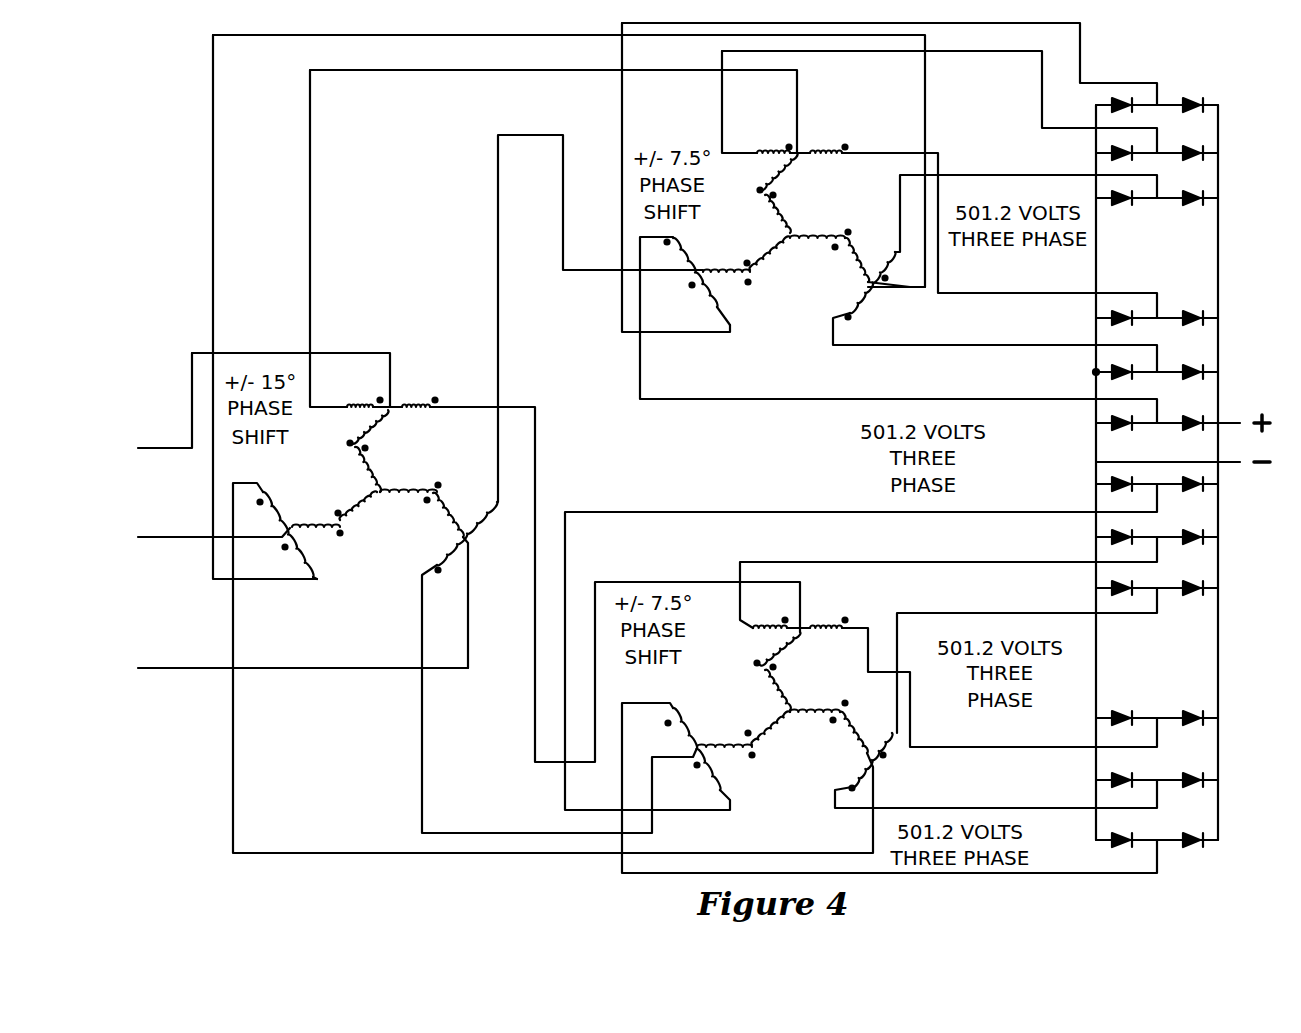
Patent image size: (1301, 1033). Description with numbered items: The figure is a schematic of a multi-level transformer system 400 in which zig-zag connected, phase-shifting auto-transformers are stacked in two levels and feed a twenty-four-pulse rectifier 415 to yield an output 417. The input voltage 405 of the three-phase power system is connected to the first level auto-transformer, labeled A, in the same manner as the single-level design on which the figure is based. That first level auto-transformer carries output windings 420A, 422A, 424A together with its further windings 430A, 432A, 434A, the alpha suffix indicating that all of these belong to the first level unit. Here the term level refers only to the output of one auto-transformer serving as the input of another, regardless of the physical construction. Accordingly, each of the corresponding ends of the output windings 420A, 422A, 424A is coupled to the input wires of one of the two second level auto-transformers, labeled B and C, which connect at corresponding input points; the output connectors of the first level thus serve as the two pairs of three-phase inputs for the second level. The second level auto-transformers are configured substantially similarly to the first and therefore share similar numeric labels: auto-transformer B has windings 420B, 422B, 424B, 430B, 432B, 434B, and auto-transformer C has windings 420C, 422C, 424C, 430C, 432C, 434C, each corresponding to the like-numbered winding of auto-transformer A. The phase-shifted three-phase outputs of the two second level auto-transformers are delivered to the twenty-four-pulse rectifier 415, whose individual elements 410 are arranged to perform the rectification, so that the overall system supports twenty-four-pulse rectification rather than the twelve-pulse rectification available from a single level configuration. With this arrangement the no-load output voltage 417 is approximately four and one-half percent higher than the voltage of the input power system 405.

The power conversion system 400 is at (170, 121).
The input voltage 405 is at (155, 445).
The diode 410 is at (1120, 82).
The twenty-four-pulse rectifier 415 is at (1180, 90).
The output 417 is at (1263, 405).
The output winding 420A is at (433, 400).
The output winding 422A is at (487, 520).
The output winding 424A is at (278, 523).
The zig-zag winding 430A is at (379, 428).
The zig-zag winding 432A is at (448, 505).
The zig-zag winding 434A is at (337, 533).
The winding of second level auto-transformer 420B is at (845, 145).
The secondary winding 422B is at (893, 287).
The secondary winding 424B is at (717, 305).
The zig-zag winding 430B is at (780, 213).
The zig-zag winding 432B is at (867, 253).
The zig-zag winding 434B is at (773, 253).
The winding of second level auto-transformer 420C is at (832, 622).
The secondary winding 422C is at (900, 750).
The secondary winding 424C is at (690, 727).
The zig-zag winding 430C is at (793, 650).
The zig-zag winding 432C is at (842, 710).
The zig-zag winding 434C is at (730, 753).